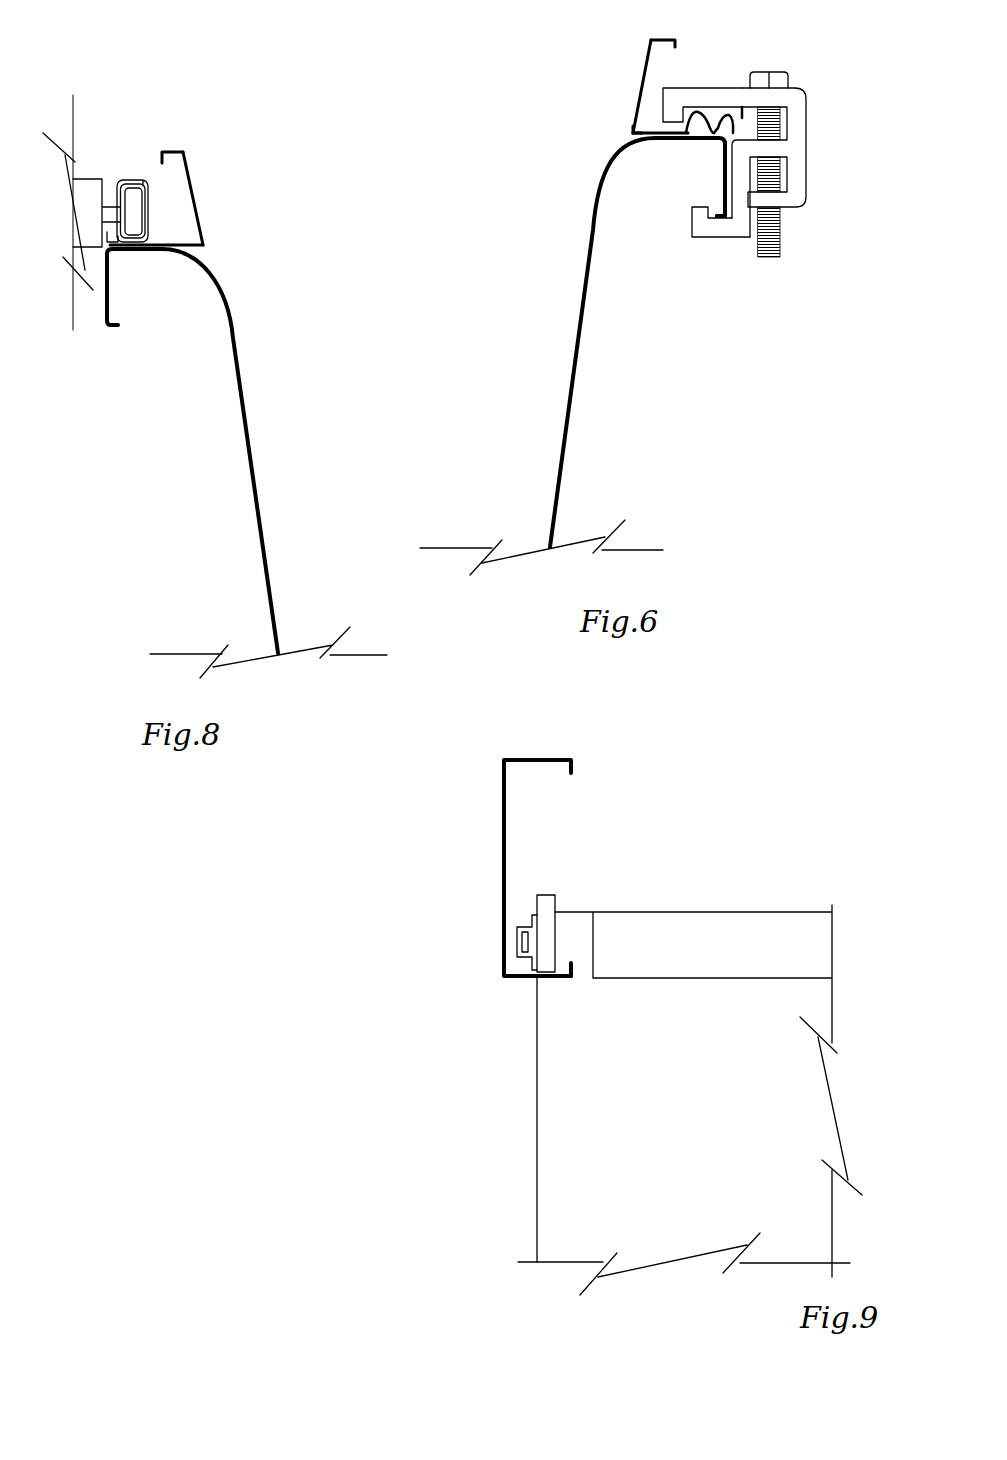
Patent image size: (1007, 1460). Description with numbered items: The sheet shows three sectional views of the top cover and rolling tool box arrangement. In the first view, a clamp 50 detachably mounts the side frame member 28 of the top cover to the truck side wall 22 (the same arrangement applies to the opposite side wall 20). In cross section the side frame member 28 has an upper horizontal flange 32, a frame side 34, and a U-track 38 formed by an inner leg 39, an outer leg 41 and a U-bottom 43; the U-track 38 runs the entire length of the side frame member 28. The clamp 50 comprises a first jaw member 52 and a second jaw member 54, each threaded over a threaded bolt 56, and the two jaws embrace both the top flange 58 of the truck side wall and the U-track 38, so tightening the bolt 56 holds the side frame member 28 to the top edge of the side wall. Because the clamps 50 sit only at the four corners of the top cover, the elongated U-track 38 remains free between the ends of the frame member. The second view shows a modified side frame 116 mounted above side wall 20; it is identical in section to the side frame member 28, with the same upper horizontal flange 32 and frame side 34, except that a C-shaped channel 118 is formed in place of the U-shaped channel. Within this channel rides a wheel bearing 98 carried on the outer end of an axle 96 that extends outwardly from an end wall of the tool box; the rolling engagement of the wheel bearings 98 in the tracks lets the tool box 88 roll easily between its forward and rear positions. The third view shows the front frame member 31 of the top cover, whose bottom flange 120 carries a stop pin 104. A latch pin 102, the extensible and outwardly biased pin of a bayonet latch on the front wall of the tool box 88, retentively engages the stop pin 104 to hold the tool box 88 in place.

In FIG. 8, the side wall 20 is at (250, 443).
In FIG. 6, the side wall 22 is at (578, 333).
In FIG. 6, the side frame member 28 is at (630, 76).
In FIG. 9, the front frame member 31 is at (502, 836).
In FIG. 8, the upper horizontal flange 32 is at (173, 150).
In FIG. 6, the upper horizontal flange 32 is at (659, 38).
In FIG. 8, the frame side 34 is at (197, 223).
In FIG. 6, the frame side 34 is at (636, 101).
In FIG. 6, the U-track 38 is at (712, 118).
In FIG. 6, the inner leg 39 is at (741, 118).
In FIG. 6, the outer leg 41 is at (660, 107).
In FIG. 6, the U-bottom 43 is at (720, 147).
In FIG. 6, the clamp 50 is at (776, 175).
In FIG. 6, the first jaw member 52 is at (800, 151).
In FIG. 6, the second jaw member 54 is at (707, 237).
In FIG. 6, the threaded bolt 56 is at (782, 230).
In FIG. 6, the top flange 58 is at (718, 212).
In FIG. 9, the tool box 88 is at (525, 1108).
In FIG. 8, the axle 96 is at (110, 207).
In FIG. 8, the wheel bearing 98 is at (133, 213).
In FIG. 9, the latch pin 102 is at (524, 941).
In FIG. 9, the stop pin 104 is at (548, 895).
In FIG. 8, the side frame 116 is at (200, 178).
In FIG. 8, the C-shaped channel 118 is at (150, 160).
In FIG. 9, the bottom flange 120 is at (520, 981).